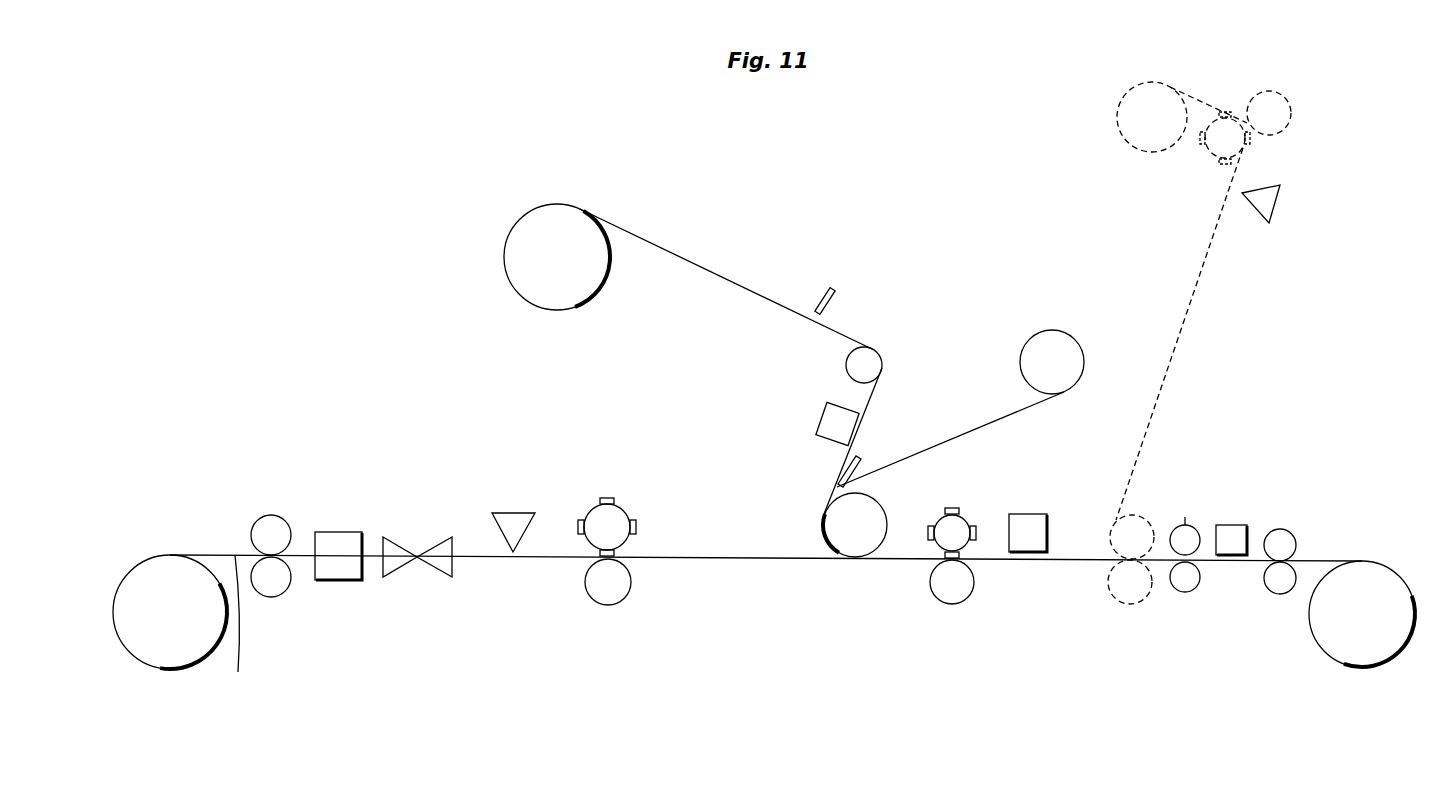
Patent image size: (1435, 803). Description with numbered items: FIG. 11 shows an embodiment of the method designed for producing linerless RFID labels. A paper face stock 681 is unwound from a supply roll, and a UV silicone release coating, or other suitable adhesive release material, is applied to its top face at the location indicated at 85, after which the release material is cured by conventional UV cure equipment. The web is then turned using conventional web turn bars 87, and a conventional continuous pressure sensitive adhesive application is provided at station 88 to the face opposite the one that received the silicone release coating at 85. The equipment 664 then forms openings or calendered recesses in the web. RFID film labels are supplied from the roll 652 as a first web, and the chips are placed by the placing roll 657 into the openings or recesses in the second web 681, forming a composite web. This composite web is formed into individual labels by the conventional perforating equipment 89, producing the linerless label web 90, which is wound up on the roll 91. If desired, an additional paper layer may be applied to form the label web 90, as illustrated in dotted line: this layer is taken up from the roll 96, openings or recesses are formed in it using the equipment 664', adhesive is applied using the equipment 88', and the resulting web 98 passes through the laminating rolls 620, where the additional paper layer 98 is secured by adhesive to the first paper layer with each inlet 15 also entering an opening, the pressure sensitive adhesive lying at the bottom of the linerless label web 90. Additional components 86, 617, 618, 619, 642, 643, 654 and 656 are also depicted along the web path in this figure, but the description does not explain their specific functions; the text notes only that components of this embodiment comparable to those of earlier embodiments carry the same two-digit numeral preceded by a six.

The inlet 15 is at (822, 537).
The release coating application 85 is at (240, 507).
The processing station 86 is at (351, 505).
The web turn bars 87 is at (426, 520).
The adhesive application station 88 is at (525, 469).
The adhesive application equipment 88' is at (1256, 236).
The perforating equipment 89 is at (1193, 606).
The linerless label web 90 is at (1346, 558).
The roll 91 is at (1342, 643).
The roll 96 is at (1128, 110).
The additional paper layer web 98 is at (1152, 422).
The sensor 617 is at (835, 272).
The heating unit 618 is at (803, 415).
The processing station 619 is at (1029, 495).
The laminating rolls 620 is at (1112, 607).
The processing station 642 is at (1237, 509).
The nip rollers 643 is at (1296, 516).
The roll of RFID film labels 652 is at (508, 278).
The peeling blade 654 is at (868, 442).
The liner take-up roll 656 is at (1068, 332).
The placing roll 657 is at (870, 505).
The opening forming equipment 664 is at (552, 603).
The opening forming equipment 664' is at (1230, 97).
The paper face stock 681 is at (207, 652).